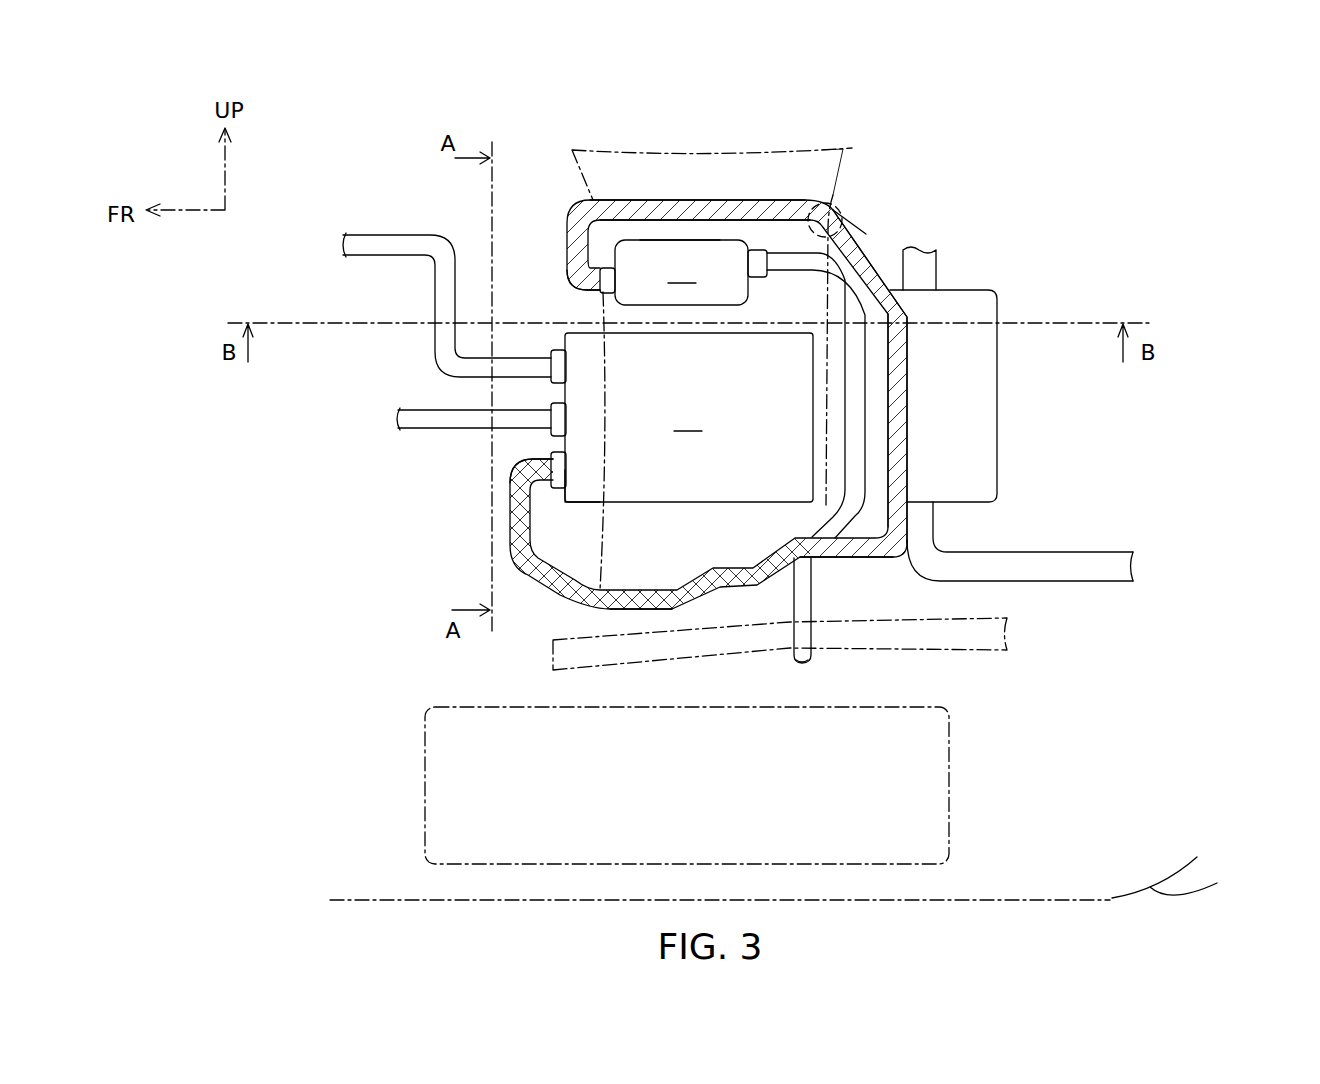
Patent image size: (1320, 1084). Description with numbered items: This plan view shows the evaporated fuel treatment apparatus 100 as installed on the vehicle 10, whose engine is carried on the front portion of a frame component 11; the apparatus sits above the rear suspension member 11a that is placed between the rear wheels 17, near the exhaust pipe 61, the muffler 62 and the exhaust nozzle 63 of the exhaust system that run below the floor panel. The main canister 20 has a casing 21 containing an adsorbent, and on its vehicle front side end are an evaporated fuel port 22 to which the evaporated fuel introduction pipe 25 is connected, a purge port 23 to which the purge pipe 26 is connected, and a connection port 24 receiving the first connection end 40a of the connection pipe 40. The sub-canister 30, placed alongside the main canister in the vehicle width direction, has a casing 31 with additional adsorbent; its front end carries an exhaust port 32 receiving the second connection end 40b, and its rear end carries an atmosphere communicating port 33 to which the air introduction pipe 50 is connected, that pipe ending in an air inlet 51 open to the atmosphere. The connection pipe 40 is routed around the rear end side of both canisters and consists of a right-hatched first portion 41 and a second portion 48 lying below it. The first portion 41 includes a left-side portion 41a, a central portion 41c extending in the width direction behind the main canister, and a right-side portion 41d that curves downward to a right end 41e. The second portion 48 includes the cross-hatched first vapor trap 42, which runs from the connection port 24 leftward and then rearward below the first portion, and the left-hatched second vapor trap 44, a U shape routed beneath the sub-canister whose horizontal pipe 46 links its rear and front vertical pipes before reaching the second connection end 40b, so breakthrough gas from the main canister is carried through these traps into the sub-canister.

The evaporated fuel treatment apparatus 100 is at (1099, 146).
The vehicle 10 is at (1217, 883).
The frame component 11 is at (933, 650).
The rear suspension member 11a is at (822, 148).
The rear wheels 17 is at (949, 760).
The main canister 20 is at (689, 417).
The casing 21 is at (508, 553).
The evaporated fuel port 22 is at (552, 383).
The purge port 23 is at (551, 437).
The connection port 24 is at (552, 451).
The evaporated fuel introduction pipe 25 is at (382, 233).
The purge pipe 26 is at (403, 410).
The sub-canister 30 is at (681, 272).
The casing 31 is at (672, 240).
The exhaust port 32 is at (607, 268).
The atmosphere communicating port 33 is at (770, 248).
The connection pipe 40 is at (563, 611).
The first connection end 40a is at (528, 459).
The second connection end 40b is at (565, 290).
The first portion 41 is at (908, 392).
The left-side portion 41a is at (872, 556).
The central portion 41c is at (908, 360).
The right-side portion 41d is at (866, 234).
The right end 41e is at (843, 212).
The first vapor trap 42 is at (599, 607).
The second vapor trap 44 is at (706, 185).
The horizontal pipe 46 is at (738, 220).
The second portion 48 is at (638, 610).
The air introduction pipe 50 is at (811, 632).
The air inlet 51 is at (803, 667).
The exhaust pipe 61 is at (936, 260).
The muffler 62 is at (997, 455).
The exhaust nozzle 63 is at (1085, 552).